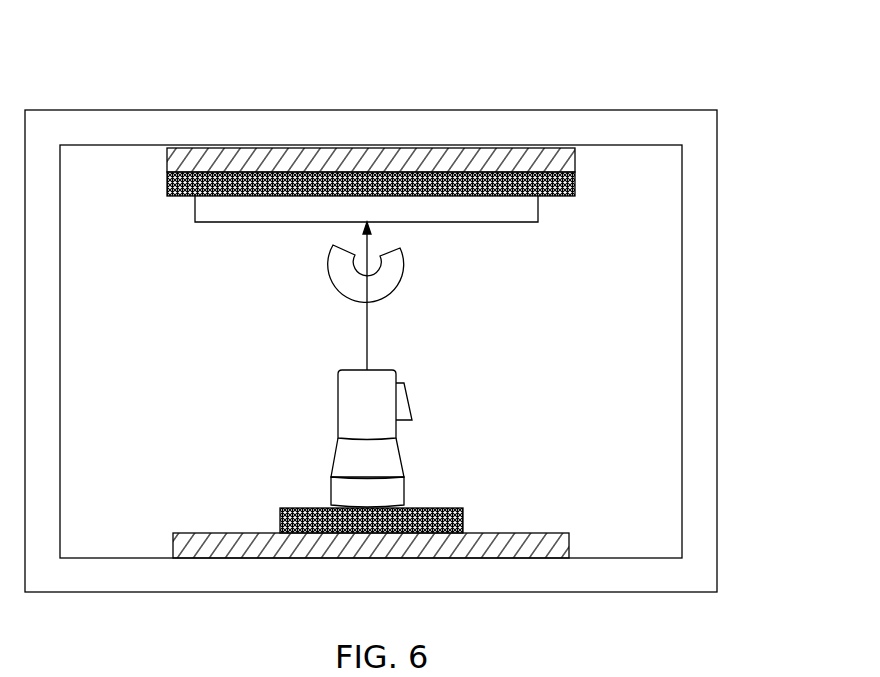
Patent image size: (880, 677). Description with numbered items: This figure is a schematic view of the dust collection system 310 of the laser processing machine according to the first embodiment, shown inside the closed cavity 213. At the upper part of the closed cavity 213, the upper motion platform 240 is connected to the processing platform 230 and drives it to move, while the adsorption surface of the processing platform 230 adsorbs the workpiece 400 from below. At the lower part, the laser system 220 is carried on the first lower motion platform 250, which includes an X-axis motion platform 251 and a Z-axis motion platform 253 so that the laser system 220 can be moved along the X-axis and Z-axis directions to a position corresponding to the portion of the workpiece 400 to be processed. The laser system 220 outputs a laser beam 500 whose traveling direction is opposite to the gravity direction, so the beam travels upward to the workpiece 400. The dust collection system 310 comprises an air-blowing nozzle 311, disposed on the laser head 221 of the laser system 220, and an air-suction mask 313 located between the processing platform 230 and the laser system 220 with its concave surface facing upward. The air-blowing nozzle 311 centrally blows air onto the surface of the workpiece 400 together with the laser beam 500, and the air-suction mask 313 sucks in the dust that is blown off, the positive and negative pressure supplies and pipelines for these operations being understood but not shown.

The closed cavity 213 is at (625, 110).
The processing platform 230 is at (167, 183).
The upper motion platform 240 is at (237, 148).
The workpiece 400 is at (232, 222).
The laser beam 500 is at (367, 340).
The dust collection system 310 is at (494, 332).
The air-suction mask 313 is at (405, 273).
The air-blowing nozzle 311 is at (412, 400).
The laser head 221 is at (338, 400).
The laser system 220 is at (331, 482).
The first lower motion platform 250 is at (416, 489).
The Z-axis motion platform 253 is at (427, 504).
The X-axis motion platform 251 is at (477, 532).